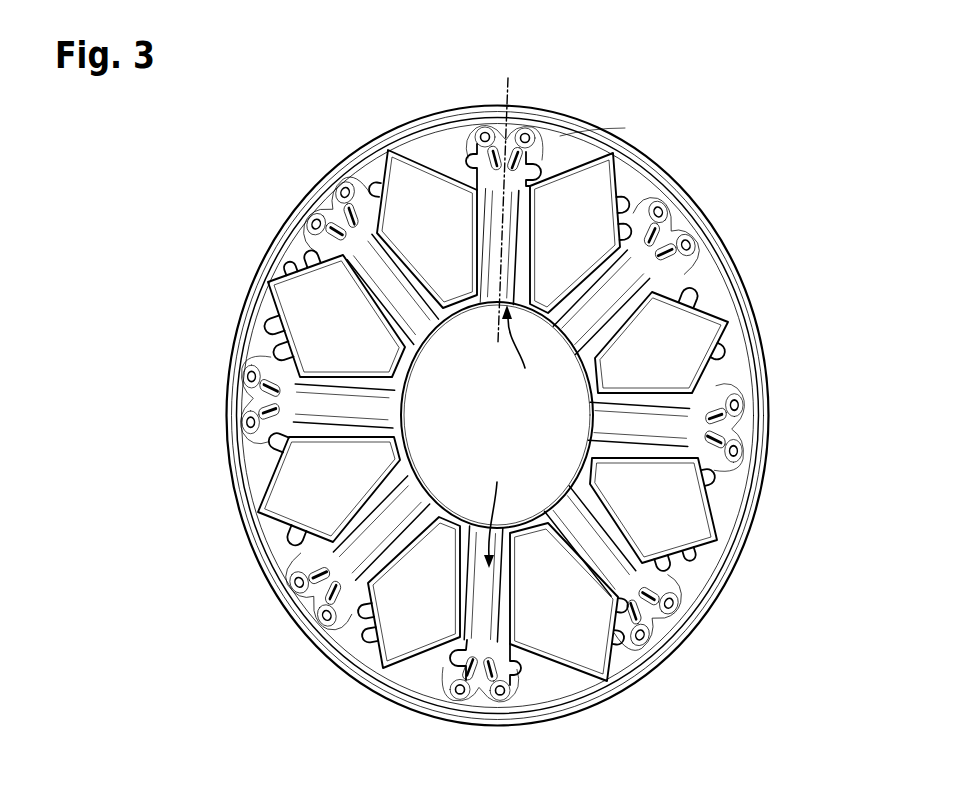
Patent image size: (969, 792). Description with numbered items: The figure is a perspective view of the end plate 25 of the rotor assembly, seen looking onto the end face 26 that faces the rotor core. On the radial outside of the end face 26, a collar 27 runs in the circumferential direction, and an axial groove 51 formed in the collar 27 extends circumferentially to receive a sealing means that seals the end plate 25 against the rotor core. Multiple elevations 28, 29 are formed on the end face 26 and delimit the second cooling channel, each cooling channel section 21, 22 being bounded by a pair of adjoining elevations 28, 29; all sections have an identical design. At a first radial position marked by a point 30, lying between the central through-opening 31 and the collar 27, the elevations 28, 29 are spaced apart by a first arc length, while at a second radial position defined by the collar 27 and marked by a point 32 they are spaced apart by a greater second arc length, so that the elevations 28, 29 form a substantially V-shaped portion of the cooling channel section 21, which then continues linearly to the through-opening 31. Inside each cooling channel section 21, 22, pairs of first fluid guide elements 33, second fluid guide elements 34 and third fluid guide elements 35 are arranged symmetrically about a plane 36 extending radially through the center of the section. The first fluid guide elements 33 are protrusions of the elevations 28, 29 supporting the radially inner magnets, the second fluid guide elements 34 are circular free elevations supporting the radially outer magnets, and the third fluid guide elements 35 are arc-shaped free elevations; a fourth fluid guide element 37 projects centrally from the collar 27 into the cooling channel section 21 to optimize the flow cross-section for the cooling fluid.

The end plate 25 is at (681, 162).
The end face 26 is at (262, 292).
The axial groove 51 is at (328, 205).
The through-opening 31 is at (467, 444).
The point 30 is at (497, 200).
The plane 36 is at (496, 345).
The cooling channel section 21 is at (520, 353).
The cooling channel section 22 is at (494, 507).
The elevation 28 is at (420, 150).
The first fluid guide element 33 is at (580, 168).
The point 32 is at (512, 128).
The fourth fluid guide element 37 is at (507, 112).
The second fluid guide element 34 is at (520, 140).
The collar 27 is at (470, 128).
The third fluid guide element 35 is at (533, 145).
The elevation 29 is at (633, 124).